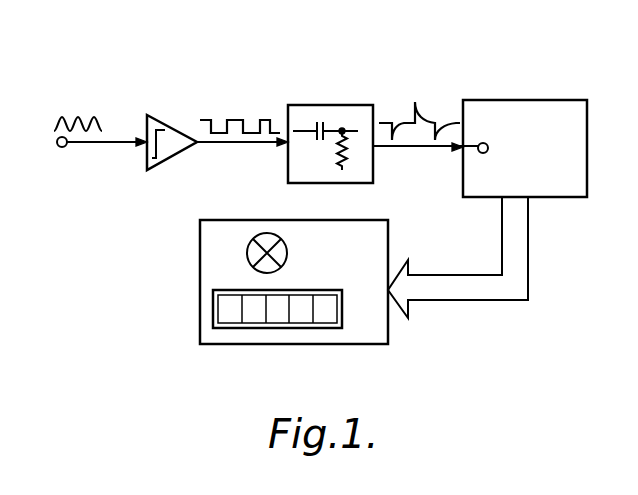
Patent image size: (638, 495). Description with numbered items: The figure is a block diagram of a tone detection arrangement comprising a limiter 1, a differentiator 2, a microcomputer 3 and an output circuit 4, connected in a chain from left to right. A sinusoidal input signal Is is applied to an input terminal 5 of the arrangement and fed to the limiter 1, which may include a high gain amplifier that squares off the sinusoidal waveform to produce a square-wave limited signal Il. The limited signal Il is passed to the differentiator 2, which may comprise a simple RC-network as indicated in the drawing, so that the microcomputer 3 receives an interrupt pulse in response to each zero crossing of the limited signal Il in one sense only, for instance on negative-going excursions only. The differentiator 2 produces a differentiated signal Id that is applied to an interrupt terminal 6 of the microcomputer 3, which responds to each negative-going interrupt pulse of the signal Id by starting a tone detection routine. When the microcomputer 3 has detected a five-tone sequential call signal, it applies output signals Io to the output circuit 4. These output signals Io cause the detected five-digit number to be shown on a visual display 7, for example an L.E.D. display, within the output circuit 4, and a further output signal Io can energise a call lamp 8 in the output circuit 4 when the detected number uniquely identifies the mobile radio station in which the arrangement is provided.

The limiter 1 is at (175, 127).
The differentiator 2 is at (328, 105).
The microcomputer 3 is at (515, 100).
The output circuit 4 is at (263, 219).
The input terminal 5 is at (61, 149).
The interrupt terminal 6 is at (478, 152).
The visual display 7 is at (212, 313).
The call lamp 8 is at (247, 256).
The input signal Is is at (87, 116).
The limited signal Il is at (252, 120).
The differentiated signal Id is at (403, 122).
The output signals Io is at (468, 275).